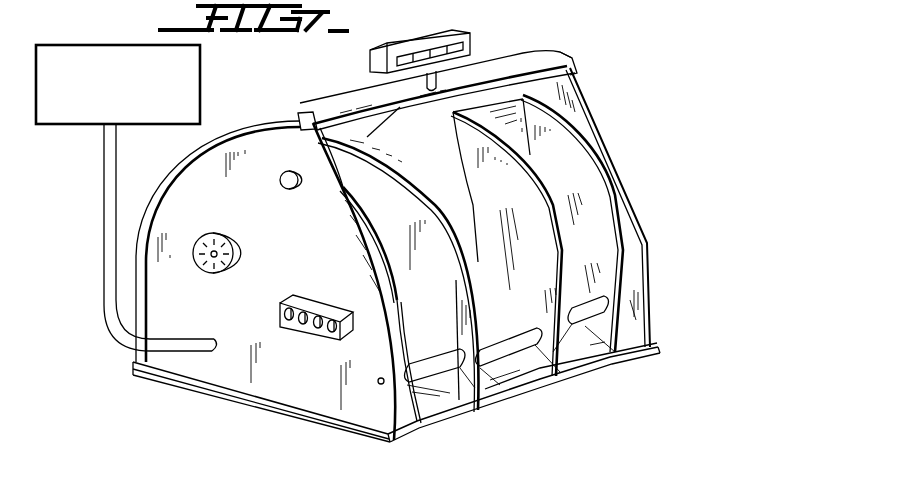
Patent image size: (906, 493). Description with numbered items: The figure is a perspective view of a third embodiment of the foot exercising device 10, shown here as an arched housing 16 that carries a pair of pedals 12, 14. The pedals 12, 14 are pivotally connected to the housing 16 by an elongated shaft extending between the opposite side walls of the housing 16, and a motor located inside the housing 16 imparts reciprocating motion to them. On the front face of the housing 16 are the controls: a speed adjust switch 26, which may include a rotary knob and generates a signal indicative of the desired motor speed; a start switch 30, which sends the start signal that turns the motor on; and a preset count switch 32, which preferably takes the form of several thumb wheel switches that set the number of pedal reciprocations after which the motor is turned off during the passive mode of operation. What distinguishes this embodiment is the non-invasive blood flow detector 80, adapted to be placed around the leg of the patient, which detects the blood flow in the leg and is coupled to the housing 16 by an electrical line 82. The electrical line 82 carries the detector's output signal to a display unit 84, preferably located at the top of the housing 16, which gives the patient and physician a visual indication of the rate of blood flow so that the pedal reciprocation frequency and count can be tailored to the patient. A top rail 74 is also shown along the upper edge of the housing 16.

The foot exercising device 10 is at (647, 213).
The pedal 12 is at (400, 181).
The pedal 14 is at (572, 167).
The housing 16 is at (234, 147).
The speed adjust switch 26 is at (219, 233).
The start switch 30 is at (287, 190).
The preset count switch 32 is at (334, 266).
The top rail 74 is at (463, 65).
The non-invasive blood flow detector 80 is at (77, 125).
The electrical line 82 is at (102, 287).
The display unit 84 is at (368, 57).